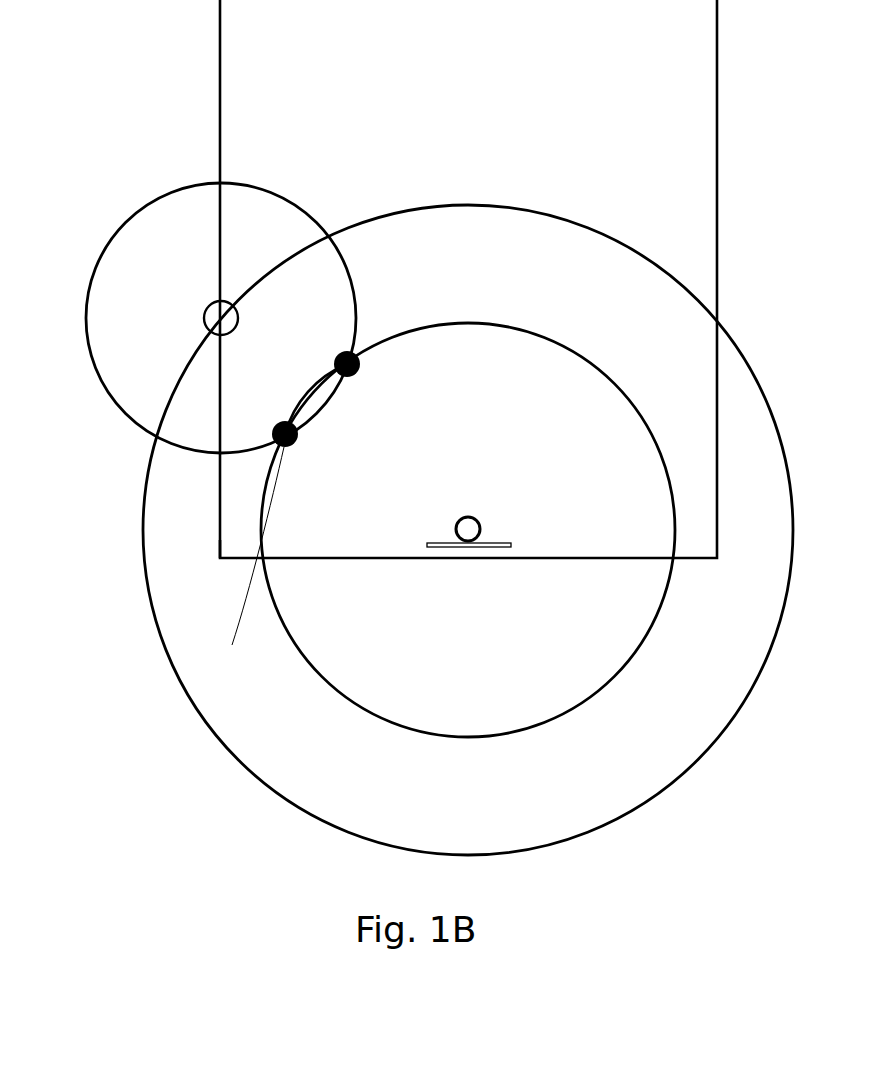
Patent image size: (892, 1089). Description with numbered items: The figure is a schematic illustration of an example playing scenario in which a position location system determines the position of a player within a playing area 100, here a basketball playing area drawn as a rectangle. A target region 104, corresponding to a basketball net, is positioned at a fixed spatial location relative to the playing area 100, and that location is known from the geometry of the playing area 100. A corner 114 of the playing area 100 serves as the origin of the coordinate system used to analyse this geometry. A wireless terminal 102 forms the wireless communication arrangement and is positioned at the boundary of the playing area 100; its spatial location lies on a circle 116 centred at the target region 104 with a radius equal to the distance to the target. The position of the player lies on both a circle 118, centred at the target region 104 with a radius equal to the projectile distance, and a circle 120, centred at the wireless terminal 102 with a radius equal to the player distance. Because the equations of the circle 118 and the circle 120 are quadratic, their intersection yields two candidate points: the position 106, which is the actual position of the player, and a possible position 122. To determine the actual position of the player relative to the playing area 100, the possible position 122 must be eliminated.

The playing area 100 is at (220, 17).
The wireless terminal 102 is at (208, 333).
The target region 104 is at (468, 533).
The position 106 is at (357, 343).
The corner 114 is at (217, 560).
The circle 116 is at (570, 840).
The circle 118 is at (583, 702).
The circle 120 is at (135, 423).
The possible position 122 is at (232, 645).